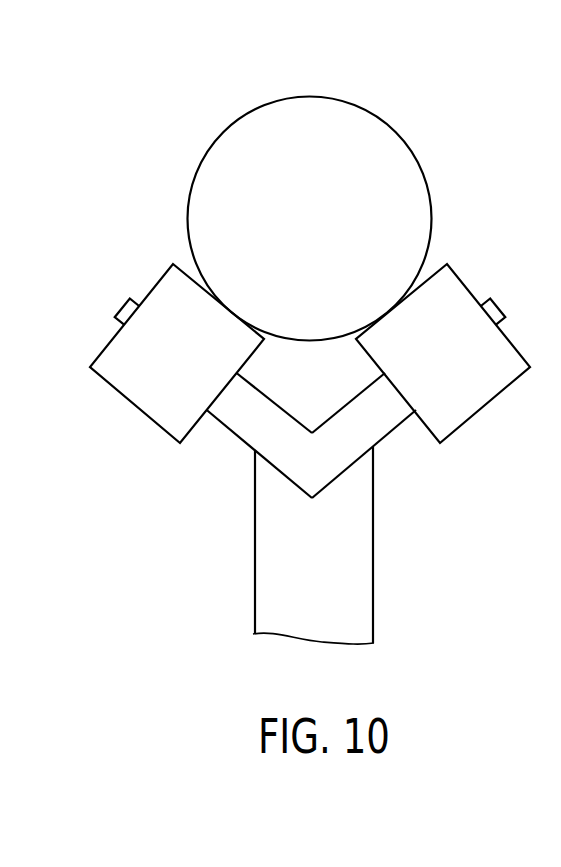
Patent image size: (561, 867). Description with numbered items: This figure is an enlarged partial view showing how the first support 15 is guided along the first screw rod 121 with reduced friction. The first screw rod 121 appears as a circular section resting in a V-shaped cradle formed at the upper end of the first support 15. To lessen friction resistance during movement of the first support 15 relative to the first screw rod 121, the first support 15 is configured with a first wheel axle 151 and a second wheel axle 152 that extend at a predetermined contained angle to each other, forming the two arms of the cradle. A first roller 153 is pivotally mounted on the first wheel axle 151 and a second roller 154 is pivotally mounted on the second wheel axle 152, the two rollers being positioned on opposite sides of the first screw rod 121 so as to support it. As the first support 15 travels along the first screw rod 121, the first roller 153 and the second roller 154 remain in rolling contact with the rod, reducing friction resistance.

The first screw rod 121 is at (350, 145).
The first support 15 is at (374, 608).
The first wheel axle 151 is at (388, 428).
The second wheel axle 152 is at (239, 421).
The first roller 153 is at (450, 287).
The second roller 154 is at (164, 302).